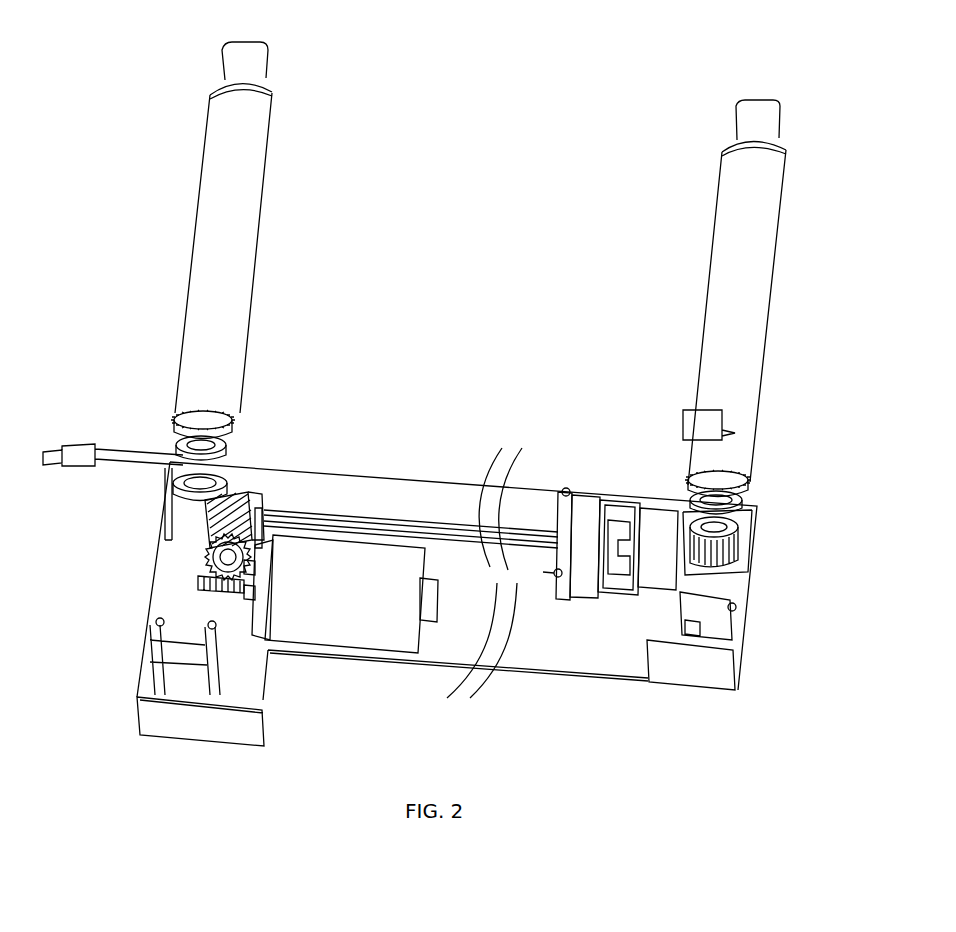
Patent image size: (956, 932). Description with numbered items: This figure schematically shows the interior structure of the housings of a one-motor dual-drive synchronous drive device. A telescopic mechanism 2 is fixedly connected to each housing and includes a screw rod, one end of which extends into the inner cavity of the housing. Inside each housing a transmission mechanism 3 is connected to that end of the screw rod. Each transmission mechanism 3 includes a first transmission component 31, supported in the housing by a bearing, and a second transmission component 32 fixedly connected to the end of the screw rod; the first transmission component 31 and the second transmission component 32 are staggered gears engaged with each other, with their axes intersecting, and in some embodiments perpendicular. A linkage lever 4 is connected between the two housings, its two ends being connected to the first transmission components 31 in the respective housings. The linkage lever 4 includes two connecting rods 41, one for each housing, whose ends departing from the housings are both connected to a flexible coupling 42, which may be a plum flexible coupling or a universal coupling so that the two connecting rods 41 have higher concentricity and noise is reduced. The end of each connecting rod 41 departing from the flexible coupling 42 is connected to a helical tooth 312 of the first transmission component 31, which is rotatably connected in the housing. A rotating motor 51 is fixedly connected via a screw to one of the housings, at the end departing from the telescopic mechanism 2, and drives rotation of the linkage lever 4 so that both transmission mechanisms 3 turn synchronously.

The telescopic mechanism 2 is at (198, 360).
The transmission mechanism 3 is at (72, 560).
The linkage lever 4 is at (425, 510).
The first transmission component 31 is at (190, 539).
The second transmission component 32 is at (172, 487).
The helical tooth 312 is at (234, 495).
The connecting rod 41 is at (352, 525).
The flexible coupling 42 is at (617, 510).
The rotating motor 51 is at (347, 605).